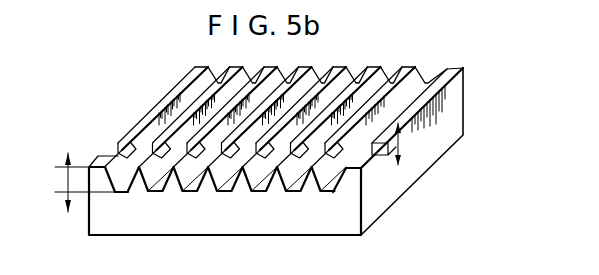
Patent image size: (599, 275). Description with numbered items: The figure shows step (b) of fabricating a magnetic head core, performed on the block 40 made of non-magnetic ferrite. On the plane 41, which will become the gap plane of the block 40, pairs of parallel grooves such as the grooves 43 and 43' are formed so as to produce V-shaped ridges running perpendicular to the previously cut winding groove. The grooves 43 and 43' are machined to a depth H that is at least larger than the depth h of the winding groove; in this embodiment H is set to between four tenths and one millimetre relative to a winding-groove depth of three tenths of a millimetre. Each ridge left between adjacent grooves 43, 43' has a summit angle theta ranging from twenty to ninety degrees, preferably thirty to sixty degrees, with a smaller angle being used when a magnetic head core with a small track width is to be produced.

The block 40 is at (430, 162).
The plane 41 is at (184, 86).
The groove 43 is at (441, 62).
The groove 43' is at (398, 68).